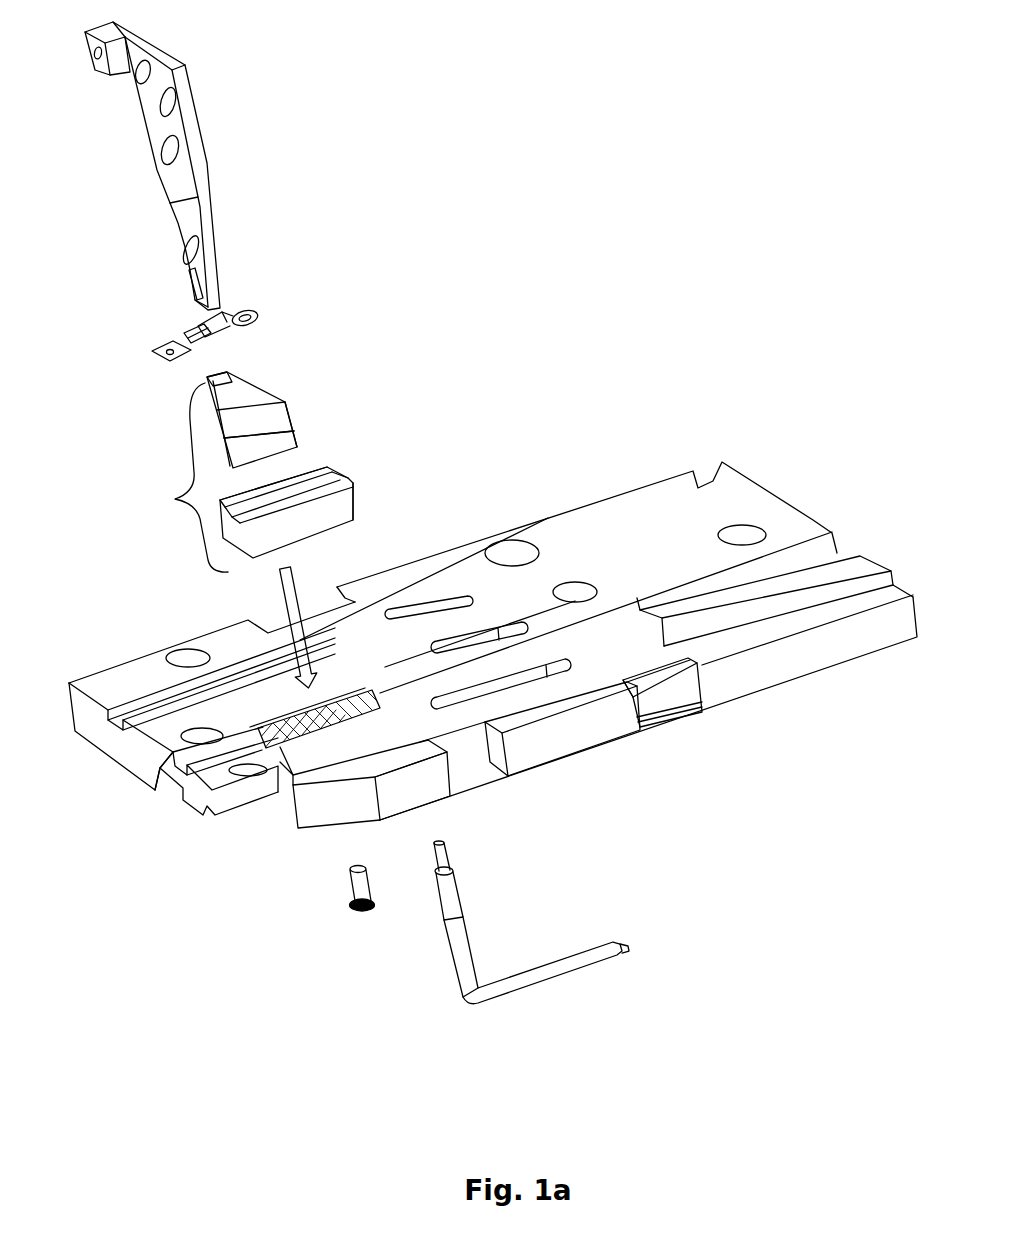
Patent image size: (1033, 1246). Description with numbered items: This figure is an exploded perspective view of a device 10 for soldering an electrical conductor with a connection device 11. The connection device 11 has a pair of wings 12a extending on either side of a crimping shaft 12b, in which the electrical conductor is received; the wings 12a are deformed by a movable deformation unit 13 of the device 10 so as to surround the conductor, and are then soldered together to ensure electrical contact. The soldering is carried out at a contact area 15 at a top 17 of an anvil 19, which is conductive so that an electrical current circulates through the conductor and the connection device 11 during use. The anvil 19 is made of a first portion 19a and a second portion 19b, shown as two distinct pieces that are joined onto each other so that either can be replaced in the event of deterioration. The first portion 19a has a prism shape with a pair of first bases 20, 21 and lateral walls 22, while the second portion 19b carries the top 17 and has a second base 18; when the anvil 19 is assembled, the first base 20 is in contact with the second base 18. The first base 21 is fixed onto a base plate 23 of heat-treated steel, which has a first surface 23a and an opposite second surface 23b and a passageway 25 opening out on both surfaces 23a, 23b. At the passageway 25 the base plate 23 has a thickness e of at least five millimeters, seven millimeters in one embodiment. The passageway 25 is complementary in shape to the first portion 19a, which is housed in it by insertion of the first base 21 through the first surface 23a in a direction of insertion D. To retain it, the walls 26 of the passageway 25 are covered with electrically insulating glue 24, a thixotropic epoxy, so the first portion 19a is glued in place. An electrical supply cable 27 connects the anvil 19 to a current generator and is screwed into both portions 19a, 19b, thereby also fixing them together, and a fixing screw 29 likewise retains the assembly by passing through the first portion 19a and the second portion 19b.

The device for soldering an electrical conductor 10 is at (652, 46).
The connection device 11 is at (251, 311).
The wings 12a is at (196, 327).
The crimping shaft 12b is at (176, 342).
The movable deformation unit 13 is at (178, 83).
The contact area 15 is at (211, 375).
The top of the anvil 17 is at (248, 374).
The second base 18 is at (280, 455).
The anvil 19 is at (175, 499).
The first portion 19a is at (364, 506).
The second portion 19b is at (304, 432).
The first base 20 is at (258, 551).
The first base 21 is at (334, 527).
The lateral walls 22 is at (367, 496).
The base plate 23 is at (486, 645).
The first surface 23a is at (863, 563).
The second surface 23b is at (877, 653).
The electrically insulating glue 24 is at (387, 699).
The passageway 25 is at (297, 753).
The walls of the passageway 26 is at (373, 697).
The electrical supply cable 27 is at (455, 960).
The fixing screw 29 is at (352, 895).
The direction of insertion D is at (296, 640).
The thickness e is at (297, 753).